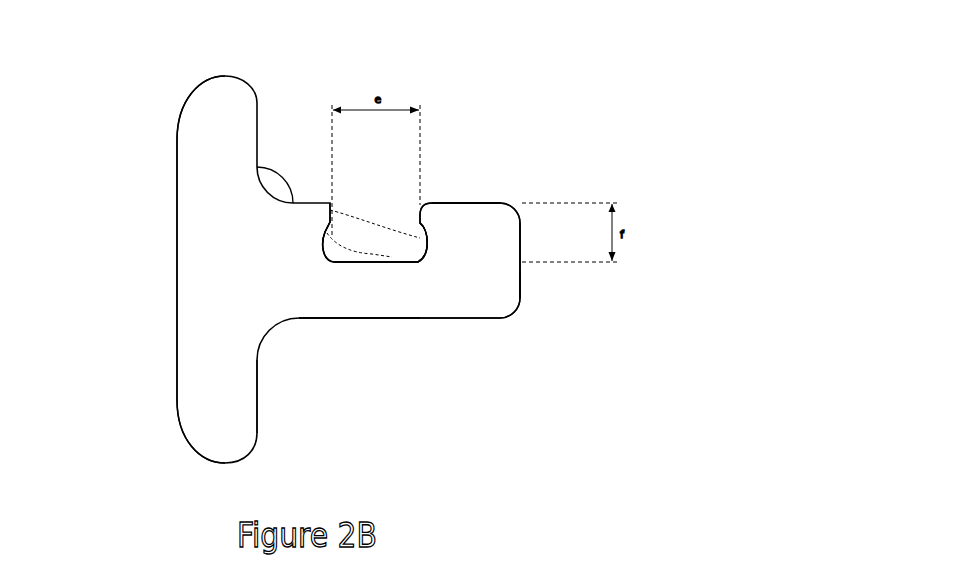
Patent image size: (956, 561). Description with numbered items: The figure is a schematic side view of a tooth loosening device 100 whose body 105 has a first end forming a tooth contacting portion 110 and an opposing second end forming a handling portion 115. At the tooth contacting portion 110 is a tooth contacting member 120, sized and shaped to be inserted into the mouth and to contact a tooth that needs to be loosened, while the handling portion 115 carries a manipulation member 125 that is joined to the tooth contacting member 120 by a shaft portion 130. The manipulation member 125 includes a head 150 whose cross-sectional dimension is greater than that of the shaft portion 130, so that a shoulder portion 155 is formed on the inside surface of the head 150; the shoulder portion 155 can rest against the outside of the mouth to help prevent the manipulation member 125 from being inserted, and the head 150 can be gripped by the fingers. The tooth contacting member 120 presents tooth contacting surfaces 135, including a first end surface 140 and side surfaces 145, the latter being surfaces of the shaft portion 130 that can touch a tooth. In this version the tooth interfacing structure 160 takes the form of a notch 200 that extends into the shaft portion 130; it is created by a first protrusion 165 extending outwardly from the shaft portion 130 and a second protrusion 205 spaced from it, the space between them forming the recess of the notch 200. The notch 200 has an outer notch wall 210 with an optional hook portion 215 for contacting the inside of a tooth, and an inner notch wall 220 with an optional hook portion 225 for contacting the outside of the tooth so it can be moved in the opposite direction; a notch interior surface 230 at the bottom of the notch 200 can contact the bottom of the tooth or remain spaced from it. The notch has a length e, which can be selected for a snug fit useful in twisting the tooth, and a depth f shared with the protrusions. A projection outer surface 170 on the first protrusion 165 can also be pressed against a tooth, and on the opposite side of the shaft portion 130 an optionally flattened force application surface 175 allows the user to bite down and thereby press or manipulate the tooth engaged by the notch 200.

The tooth loosening device 100 is at (555, 68).
The body 105 is at (575, 92).
The tooth contacting portion 110 is at (598, 155).
The handling portion 115 is at (147, 92).
The tooth contacting member 120 is at (540, 145).
The manipulation member 125 is at (163, 243).
The shaft portion 130 is at (480, 358).
The tooth contacting surfaces 135 is at (573, 272).
The first end surface 140 is at (520, 283).
The side surfaces 145 is at (492, 297).
The head 150 is at (178, 417).
The shoulder portion 155 is at (261, 394).
The tooth interfacing structure 160 is at (465, 125).
The first protrusion 165 is at (505, 238).
The projection outer surface 170 is at (483, 200).
The force application surface 175 is at (382, 321).
The notch 200 is at (362, 163).
The second protrusion 205 is at (275, 217).
The outer notch wall 210 is at (413, 233).
The hook portion 215 is at (438, 198).
The inner notch wall 220 is at (345, 230).
The hook portion 225 is at (430, 236).
The notch interior surface 230 is at (337, 262).